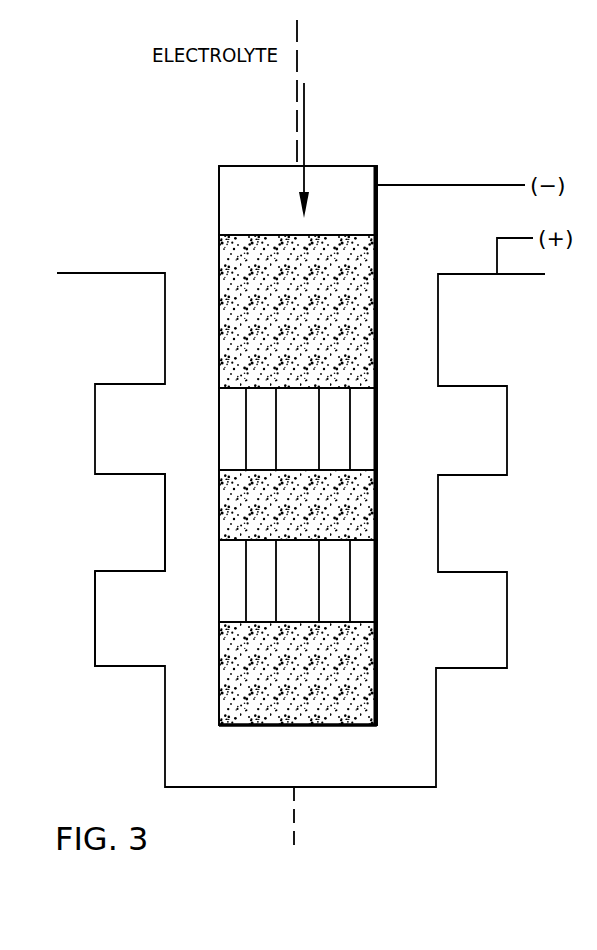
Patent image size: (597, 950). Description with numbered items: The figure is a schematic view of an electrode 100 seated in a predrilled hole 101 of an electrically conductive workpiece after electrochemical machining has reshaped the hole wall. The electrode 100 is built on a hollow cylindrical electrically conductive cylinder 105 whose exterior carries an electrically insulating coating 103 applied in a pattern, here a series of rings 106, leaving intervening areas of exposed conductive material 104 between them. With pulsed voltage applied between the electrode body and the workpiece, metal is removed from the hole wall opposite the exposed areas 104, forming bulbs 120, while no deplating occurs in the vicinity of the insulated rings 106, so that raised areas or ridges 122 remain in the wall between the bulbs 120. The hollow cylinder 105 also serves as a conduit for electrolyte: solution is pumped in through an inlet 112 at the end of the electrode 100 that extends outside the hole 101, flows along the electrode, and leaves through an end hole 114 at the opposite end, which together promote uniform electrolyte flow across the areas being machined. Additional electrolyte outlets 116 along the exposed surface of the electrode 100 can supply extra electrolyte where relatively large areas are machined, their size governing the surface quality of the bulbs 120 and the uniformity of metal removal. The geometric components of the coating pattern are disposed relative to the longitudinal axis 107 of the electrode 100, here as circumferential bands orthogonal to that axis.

The electrode 100 is at (400, 85).
The predrilled hole 101 is at (188, 268).
The electrically insulating coating 103 is at (360, 272).
The areas of exposed conductive material 104 is at (230, 428).
The hollow cylindrical electrically conductive cylinder 105 is at (233, 197).
The rings 106 is at (392, 503).
The longitudinal axis 107 is at (294, 823).
The inlet 112 is at (304, 165).
The end hole 114 is at (325, 727).
The electrolyte outlets 116 is at (369, 436).
The bulbs 120 is at (110, 655).
The raised areas or ridges 122 is at (183, 556).